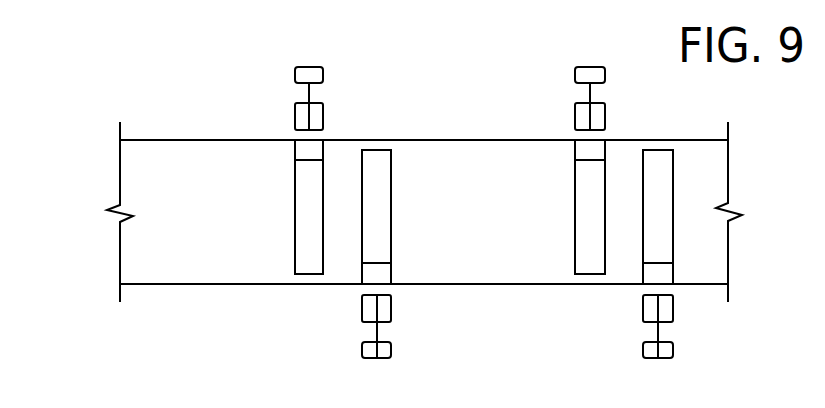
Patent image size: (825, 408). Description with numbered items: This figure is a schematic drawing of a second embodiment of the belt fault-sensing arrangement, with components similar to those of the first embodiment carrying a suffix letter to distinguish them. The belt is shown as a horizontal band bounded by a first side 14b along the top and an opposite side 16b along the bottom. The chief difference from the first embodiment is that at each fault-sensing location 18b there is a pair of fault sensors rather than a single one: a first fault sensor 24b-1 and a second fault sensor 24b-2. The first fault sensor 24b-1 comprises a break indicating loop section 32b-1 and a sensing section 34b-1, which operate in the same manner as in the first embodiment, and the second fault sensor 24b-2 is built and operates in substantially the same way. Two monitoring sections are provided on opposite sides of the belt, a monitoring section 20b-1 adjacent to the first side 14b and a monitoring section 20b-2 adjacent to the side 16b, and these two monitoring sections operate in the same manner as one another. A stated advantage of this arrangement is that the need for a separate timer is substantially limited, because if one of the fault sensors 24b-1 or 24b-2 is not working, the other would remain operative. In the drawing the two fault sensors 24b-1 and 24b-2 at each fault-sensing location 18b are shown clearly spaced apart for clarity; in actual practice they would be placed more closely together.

The first side 14b is at (183, 140).
The side 16b is at (178, 284).
The fault-sensing location 18b is at (312, 312).
The monitoring section 20b-1 is at (325, 107).
The monitoring section 20b-2 is at (391, 318).
The first fault sensor 24b-1 is at (295, 193).
The second fault sensor 24b-2 is at (392, 208).
The break indicating loop section 32b-1 is at (295, 234).
The sensing section 34b-1 is at (295, 152).